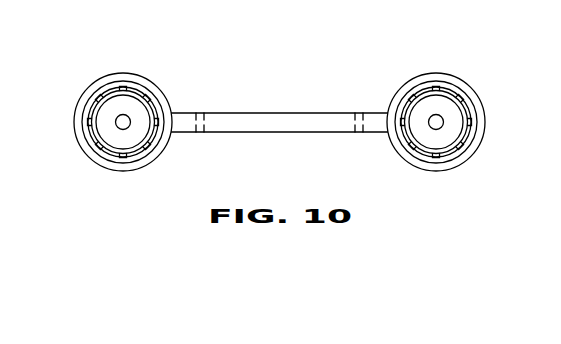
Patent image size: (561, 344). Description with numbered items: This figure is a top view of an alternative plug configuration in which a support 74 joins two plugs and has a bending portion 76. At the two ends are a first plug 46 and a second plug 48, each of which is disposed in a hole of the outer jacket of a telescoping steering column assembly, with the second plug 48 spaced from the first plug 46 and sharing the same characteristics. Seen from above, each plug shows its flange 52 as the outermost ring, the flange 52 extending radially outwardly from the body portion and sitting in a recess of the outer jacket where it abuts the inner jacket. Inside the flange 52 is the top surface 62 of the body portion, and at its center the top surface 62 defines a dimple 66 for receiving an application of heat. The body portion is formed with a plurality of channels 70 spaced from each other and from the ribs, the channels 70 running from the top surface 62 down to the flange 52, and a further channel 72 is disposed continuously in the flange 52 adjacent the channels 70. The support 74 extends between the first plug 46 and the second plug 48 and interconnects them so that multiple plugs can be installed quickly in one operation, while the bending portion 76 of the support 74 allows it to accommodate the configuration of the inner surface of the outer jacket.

The first plug 46 is at (81, 146).
The second plug 48 is at (478, 146).
The flange 52 is at (88, 88).
The top surface 62 is at (101, 90).
The dimple 66 is at (121, 127).
The channels 70 is at (115, 103).
The channel 72 is at (152, 103).
The support 74 is at (277, 113).
The bending portion 76 is at (203, 113).